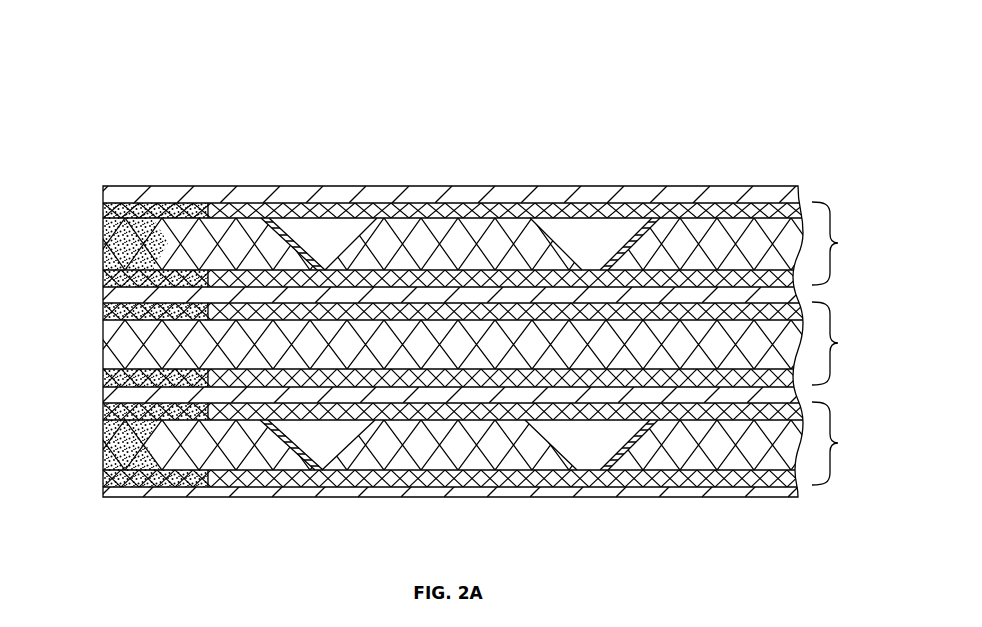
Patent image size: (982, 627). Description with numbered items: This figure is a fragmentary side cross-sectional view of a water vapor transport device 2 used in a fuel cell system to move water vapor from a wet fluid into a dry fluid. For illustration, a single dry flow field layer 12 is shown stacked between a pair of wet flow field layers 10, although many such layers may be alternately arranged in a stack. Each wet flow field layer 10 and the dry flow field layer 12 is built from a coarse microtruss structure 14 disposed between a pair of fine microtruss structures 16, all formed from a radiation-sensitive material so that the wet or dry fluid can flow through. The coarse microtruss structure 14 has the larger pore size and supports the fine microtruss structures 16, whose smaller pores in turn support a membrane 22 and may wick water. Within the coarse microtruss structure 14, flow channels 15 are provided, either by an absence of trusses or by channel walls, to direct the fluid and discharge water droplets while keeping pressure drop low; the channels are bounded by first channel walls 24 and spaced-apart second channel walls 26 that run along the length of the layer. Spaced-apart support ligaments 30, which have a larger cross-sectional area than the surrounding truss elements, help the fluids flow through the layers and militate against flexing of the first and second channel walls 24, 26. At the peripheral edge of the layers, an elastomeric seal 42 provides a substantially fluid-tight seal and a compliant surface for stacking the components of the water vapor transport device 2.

The water vapor transport device 2 is at (784, 90).
The wet flow field layer 10 is at (840, 343).
The dry flow field layer 12 is at (840, 343).
The coarse microtruss structure 14 is at (199, 225).
The flow channels 15 is at (319, 216).
The fine microtruss structure 16 is at (423, 272).
The membrane 22 is at (103, 195).
The first channel walls 24 is at (297, 237).
The second channel walls 26 is at (652, 227).
The support ligaments 30 is at (396, 222).
The seal 42 is at (103, 230).